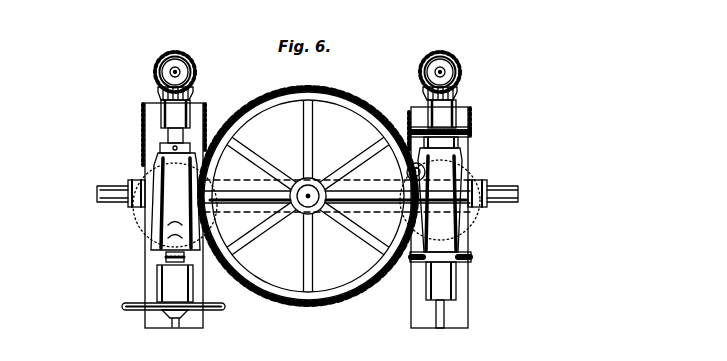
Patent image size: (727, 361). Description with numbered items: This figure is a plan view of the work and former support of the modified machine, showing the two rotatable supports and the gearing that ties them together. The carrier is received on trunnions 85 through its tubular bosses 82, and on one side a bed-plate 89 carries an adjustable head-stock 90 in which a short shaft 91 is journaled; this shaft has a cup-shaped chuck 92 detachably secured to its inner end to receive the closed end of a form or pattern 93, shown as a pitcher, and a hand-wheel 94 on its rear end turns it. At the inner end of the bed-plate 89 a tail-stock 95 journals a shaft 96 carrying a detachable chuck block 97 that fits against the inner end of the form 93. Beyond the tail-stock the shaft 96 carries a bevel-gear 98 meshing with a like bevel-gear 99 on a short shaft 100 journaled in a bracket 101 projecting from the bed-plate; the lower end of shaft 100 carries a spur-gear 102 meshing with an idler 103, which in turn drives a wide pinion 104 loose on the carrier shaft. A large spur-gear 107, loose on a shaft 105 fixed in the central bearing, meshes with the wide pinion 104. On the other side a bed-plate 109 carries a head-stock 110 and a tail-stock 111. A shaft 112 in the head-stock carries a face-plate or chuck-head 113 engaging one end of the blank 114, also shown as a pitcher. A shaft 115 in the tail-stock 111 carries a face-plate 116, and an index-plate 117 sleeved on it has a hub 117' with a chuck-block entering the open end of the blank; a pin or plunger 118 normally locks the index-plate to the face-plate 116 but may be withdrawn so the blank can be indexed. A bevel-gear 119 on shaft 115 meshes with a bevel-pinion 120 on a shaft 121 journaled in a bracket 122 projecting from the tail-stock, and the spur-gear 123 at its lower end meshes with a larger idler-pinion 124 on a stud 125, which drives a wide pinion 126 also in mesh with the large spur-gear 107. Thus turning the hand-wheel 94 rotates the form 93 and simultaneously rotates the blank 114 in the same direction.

The tubular boss 82 is at (133, 182).
The trunnion 85 is at (99, 193).
The bed-plate 89 is at (202, 322).
The head-stock 90 is at (160, 281).
The short shaft 91 is at (173, 318).
The chuck 92 is at (166, 259).
The form or pattern 93 is at (155, 232).
The hand-wheel 94 is at (128, 308).
The tail-stock 95 is at (192, 106).
The shaft 96 is at (195, 68).
The chuck block 97 is at (160, 148).
The bevel-gear 98 is at (158, 92).
The bevel-gear 99 is at (181, 53).
The short shaft 100 is at (176, 71).
The bracket 101 is at (200, 104).
The spur-gear 102 is at (156, 62).
The idler 103 is at (145, 118).
The wide pinion 104 is at (160, 214).
The shaft 105 is at (313, 184).
The large spur-gear 107 is at (350, 94).
The bed-plate 109 is at (460, 315).
The head-stock 110 is at (456, 280).
The tail-stock 111 is at (458, 118).
The shaft 112 is at (438, 302).
The face-plate or chuck-head 113 is at (470, 256).
The blank 114 is at (455, 236).
The shaft 115 is at (460, 80).
The face-plate 116 is at (471, 130).
The index-plate 117 is at (488, 138).
The hub 117' is at (376, 160).
The pin or plunger 118 is at (462, 152).
The bevel-gear 119 is at (459, 93).
The bevel-pinion 120 is at (457, 61).
The shaft 121 is at (439, 72).
The bracket 122 is at (452, 104).
The spur-gear 123 is at (442, 52).
The idler-pinion 124 is at (411, 118).
The stud 125 is at (470, 122).
The wide pinion 126 is at (466, 173).